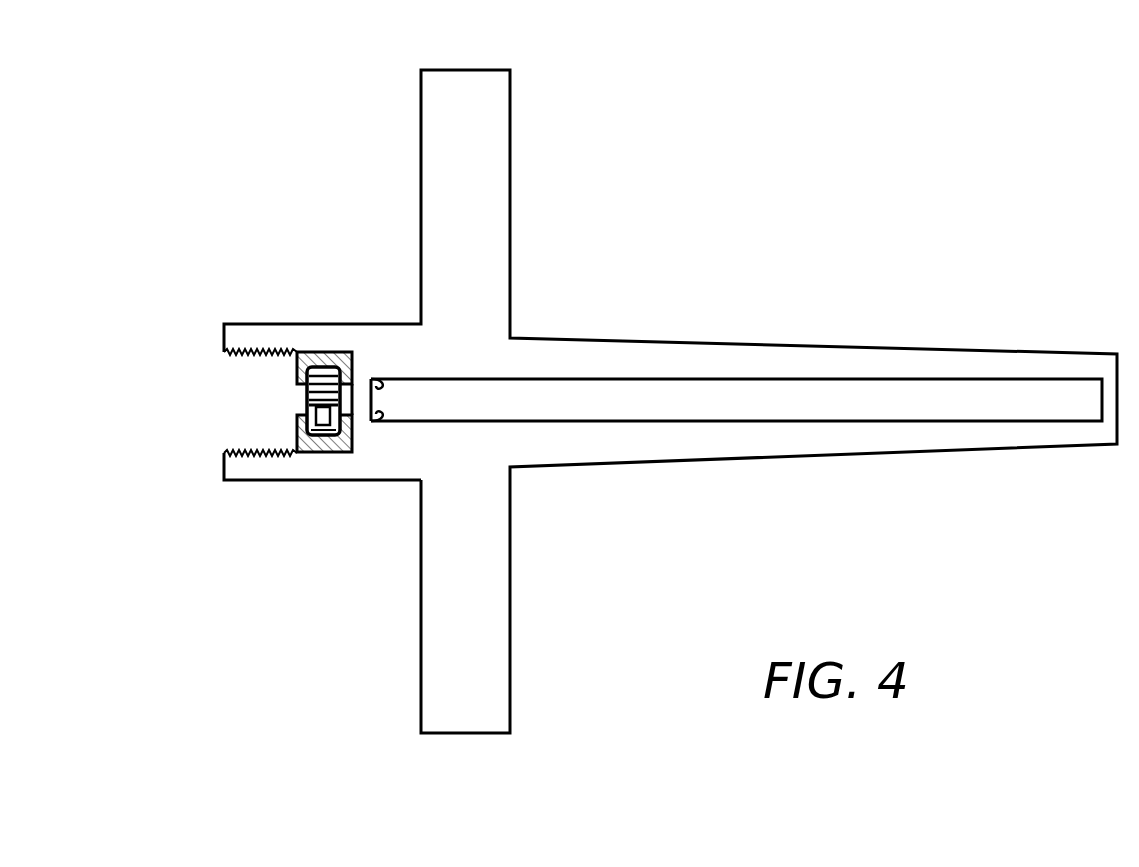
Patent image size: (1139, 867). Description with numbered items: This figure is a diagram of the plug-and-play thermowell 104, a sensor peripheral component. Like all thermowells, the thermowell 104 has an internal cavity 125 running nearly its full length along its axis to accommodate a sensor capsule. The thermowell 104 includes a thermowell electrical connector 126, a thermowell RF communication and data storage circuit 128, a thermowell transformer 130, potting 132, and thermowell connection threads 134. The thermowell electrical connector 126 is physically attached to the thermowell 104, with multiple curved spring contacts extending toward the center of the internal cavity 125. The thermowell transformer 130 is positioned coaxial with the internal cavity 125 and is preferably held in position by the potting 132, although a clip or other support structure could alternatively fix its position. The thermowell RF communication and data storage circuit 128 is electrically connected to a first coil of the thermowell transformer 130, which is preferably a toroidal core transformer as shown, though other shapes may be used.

The plug-and-play thermowell 104 is at (165, 166).
The internal cavity 125 is at (618, 378).
The thermowell electrical connector 126 is at (360, 417).
The thermowell RF communication and data storage circuit 128 is at (318, 435).
The thermowell transformer 130 is at (327, 368).
The potting 132 is at (355, 357).
The thermowell connection threads 134 is at (227, 355).